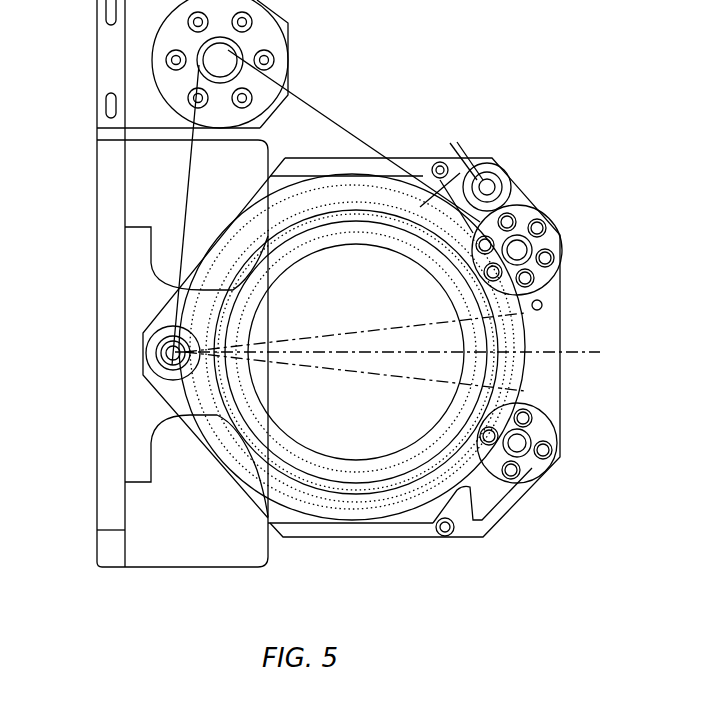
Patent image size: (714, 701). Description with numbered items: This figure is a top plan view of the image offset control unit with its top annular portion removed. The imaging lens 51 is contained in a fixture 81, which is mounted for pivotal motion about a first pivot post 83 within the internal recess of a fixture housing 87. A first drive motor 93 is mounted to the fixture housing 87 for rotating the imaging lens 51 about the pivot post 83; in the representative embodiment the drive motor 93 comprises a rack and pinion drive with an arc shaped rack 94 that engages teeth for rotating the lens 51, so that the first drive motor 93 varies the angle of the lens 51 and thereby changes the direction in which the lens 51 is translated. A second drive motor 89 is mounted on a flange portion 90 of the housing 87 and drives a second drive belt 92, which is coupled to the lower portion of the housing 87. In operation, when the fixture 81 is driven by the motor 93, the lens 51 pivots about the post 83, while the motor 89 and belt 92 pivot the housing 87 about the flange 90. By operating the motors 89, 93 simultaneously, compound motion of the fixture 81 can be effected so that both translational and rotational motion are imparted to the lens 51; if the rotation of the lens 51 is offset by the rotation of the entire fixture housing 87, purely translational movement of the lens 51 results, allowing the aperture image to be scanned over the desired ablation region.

The flange portion 90 is at (103, 45).
The second drive motor 89 is at (283, 45).
The second drive belt 92 is at (346, 128).
The first drive motor 93 is at (562, 230).
The first pivot post 83 is at (145, 355).
The arc shaped rack 94 is at (590, 348).
The imaging lens 51 is at (320, 483).
The fixture 81 is at (393, 523).
The fixture housing 87 is at (495, 530).